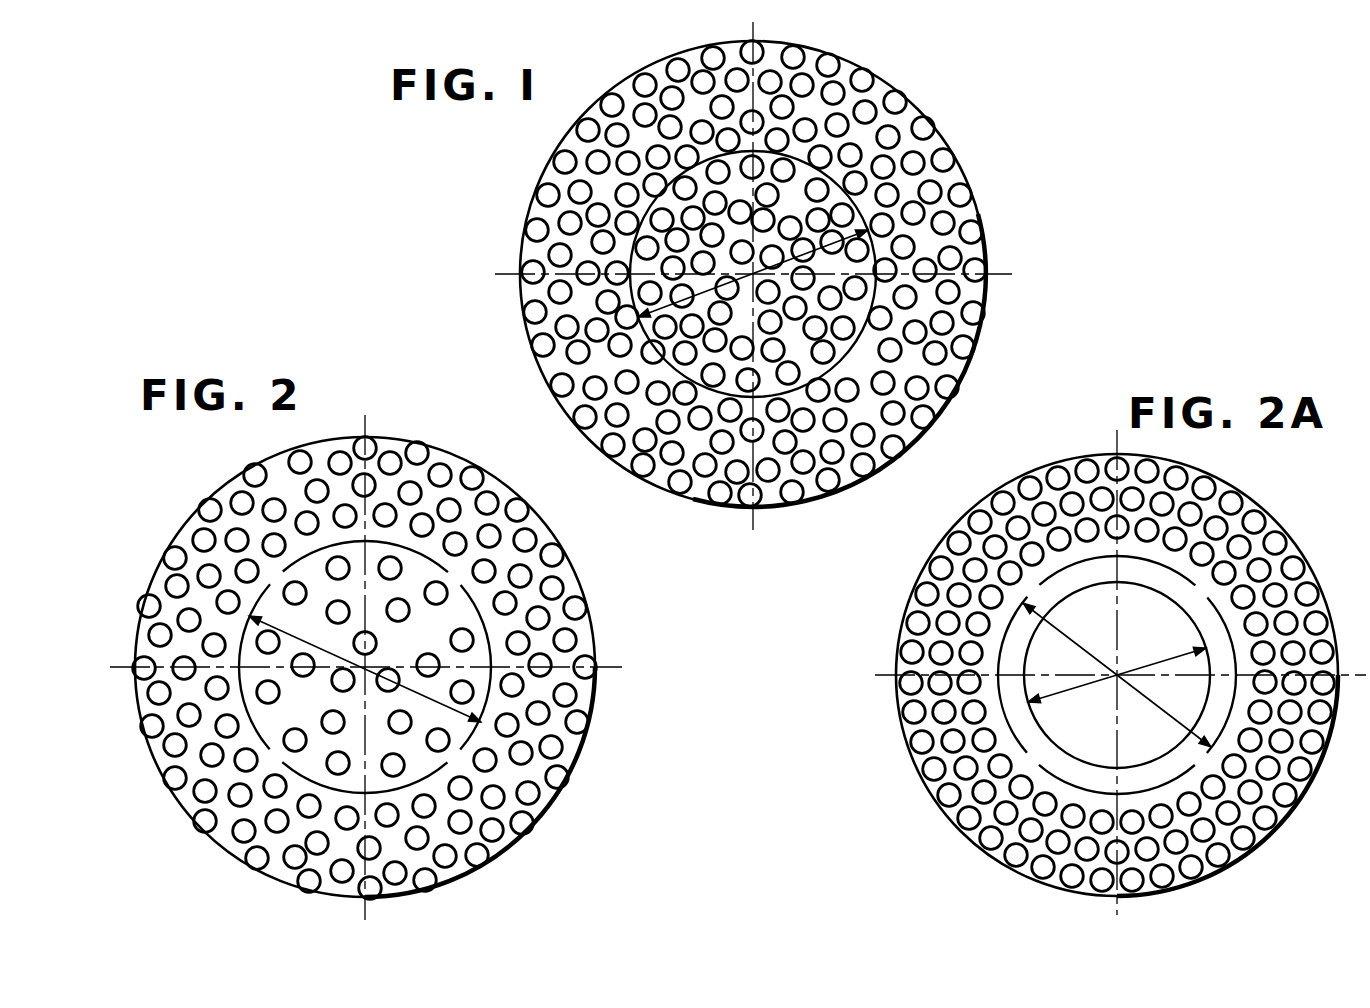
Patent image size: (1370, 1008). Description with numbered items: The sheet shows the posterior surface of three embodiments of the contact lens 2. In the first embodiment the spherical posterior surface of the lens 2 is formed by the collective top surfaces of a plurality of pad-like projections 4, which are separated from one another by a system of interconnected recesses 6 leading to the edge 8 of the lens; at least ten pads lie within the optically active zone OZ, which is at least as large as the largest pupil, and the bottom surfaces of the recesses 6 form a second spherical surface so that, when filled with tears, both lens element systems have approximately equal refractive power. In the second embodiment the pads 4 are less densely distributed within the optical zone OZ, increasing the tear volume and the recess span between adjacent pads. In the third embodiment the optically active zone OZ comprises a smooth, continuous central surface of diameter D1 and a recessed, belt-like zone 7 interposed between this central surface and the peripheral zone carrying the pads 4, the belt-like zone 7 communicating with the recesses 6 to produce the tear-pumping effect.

In FIG. 1, the perforated plate 2 is at (525, 195).
In FIG. 2, the perforated plate 2 is at (216, 496).
In FIG. 2A, the perforated plate 2 is at (1266, 505).
In FIG. 1, the pad-like projections 4 is at (948, 324).
In FIG. 2, the pad-like projections 4 is at (527, 540).
In FIG. 2A, the pad-like projections 4 is at (1300, 784).
In FIG. 1, the interconnected recesses 6 is at (928, 397).
In FIG. 2, the interconnected recesses 6 is at (585, 635).
In FIG. 2A, the interconnected recesses 6 is at (1316, 710).
In FIG. 1, the edge 8 is at (855, 479).
In FIG. 2A, the recessed belt-like zone 7 is at (1102, 579).
In FIG. 1, the optically active zone OZ is at (648, 318).
In FIG. 2, the optically active zone OZ is at (327, 655).
In FIG. 2A, the optically active zone OZ is at (1087, 651).
In FIG. 2A, the diameter of the central smooth surface D1 is at (1117, 670).